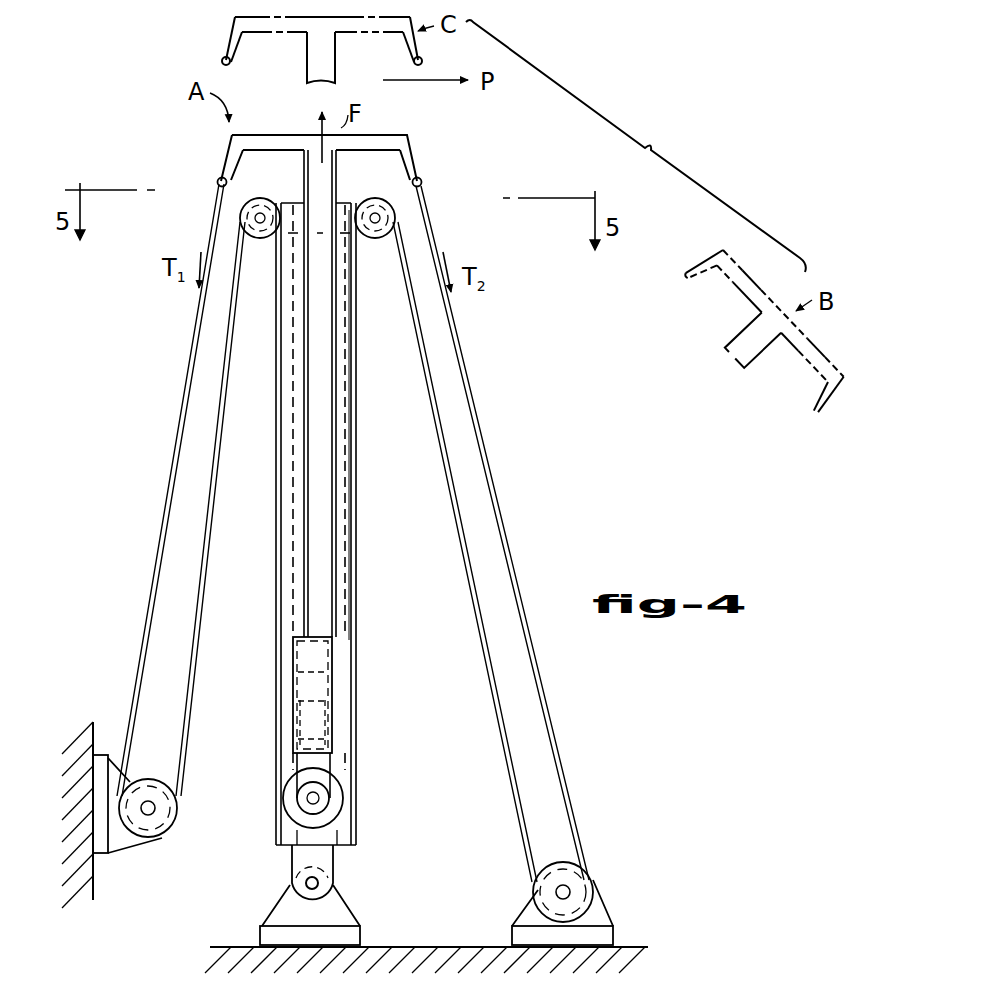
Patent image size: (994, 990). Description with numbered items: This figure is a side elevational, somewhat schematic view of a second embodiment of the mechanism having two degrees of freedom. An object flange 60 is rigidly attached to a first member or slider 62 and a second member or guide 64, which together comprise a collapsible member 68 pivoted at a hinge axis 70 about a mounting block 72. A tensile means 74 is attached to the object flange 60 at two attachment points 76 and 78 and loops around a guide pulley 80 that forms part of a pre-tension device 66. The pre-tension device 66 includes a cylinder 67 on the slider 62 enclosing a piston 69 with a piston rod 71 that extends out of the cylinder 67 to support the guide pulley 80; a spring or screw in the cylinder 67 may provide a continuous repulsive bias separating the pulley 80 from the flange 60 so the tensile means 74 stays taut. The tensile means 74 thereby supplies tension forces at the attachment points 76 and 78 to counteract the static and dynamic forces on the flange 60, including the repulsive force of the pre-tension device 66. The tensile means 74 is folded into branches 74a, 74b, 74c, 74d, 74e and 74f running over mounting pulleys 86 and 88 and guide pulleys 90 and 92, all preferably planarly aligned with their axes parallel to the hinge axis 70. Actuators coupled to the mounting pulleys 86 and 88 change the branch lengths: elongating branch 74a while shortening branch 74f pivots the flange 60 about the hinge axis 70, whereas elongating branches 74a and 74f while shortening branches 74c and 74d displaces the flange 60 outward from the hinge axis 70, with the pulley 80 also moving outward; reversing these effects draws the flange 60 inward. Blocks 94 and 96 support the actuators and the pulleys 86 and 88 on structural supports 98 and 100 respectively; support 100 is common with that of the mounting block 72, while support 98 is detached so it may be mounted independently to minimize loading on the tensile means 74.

The object flange 60 is at (386, 136).
The slider 62 is at (318, 321).
The guide 64 is at (356, 381).
The pre-tension device 66 is at (336, 652).
The cylinder 67 is at (360, 672).
The collapsible member 68 is at (362, 846).
The piston 69 is at (355, 701).
The hinge axis 70 is at (320, 883).
The piston rod 71 is at (360, 739).
The mounting block 72 is at (362, 936).
The tensile means 74 is at (155, 443).
The branch of tensile means 74a is at (158, 543).
The branch of tensile means 74b is at (198, 646).
The branch of tensile means 74c is at (281, 508).
The branch of tensile means 74d is at (358, 528).
The branch of tensile means 74e is at (508, 770).
The branch of tensile means 74f is at (551, 661).
The attachment point 76 is at (421, 180).
The attachment point 78 is at (220, 179).
The guide pulley 80 is at (289, 810).
The mounting pulley 86 is at (162, 838).
The mounting pulley 88 is at (596, 886).
The guide pulley 90 is at (240, 216).
The guide pulley 92 is at (396, 217).
The block 94 is at (101, 858).
The block 96 is at (601, 915).
The structural support 98 is at (76, 724).
The structural support 100 is at (602, 947).